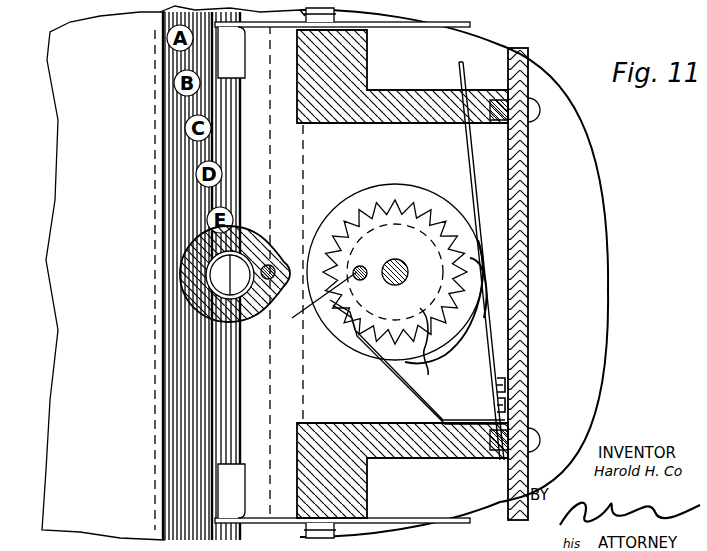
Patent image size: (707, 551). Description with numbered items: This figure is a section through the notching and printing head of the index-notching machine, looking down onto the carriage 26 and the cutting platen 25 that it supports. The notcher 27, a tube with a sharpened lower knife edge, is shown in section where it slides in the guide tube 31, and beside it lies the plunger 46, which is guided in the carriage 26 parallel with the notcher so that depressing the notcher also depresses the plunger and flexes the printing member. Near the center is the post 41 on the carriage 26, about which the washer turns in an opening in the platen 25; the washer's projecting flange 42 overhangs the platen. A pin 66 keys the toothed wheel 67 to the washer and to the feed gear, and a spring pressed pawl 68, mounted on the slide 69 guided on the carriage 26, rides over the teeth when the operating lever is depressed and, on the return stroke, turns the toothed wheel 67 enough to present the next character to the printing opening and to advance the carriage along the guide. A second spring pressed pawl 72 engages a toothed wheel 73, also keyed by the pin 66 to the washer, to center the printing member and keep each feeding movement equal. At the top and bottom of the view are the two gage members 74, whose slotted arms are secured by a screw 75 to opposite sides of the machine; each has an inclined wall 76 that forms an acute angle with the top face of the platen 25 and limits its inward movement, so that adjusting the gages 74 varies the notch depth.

The cutting platen 25 is at (600, 282).
The carriage 26 is at (367, 58).
The notcher 27 is at (215, 256).
The guide tube 31 is at (206, 275).
The post 41 is at (391, 262).
The projecting flange 42 is at (445, 200).
The plunger 46 is at (270, 265).
The pin 66 is at (296, 316).
The toothed wheel 67 is at (452, 336).
The spring pressed pawl 68 is at (486, 296).
The slide 69 is at (518, 236).
The spring pressed pawl 72 is at (392, 368).
The toothed wheel 73 is at (434, 346).
The gage member 74 is at (285, 28).
The screw 75 is at (336, 14).
The inclined wall 76 is at (246, 80).